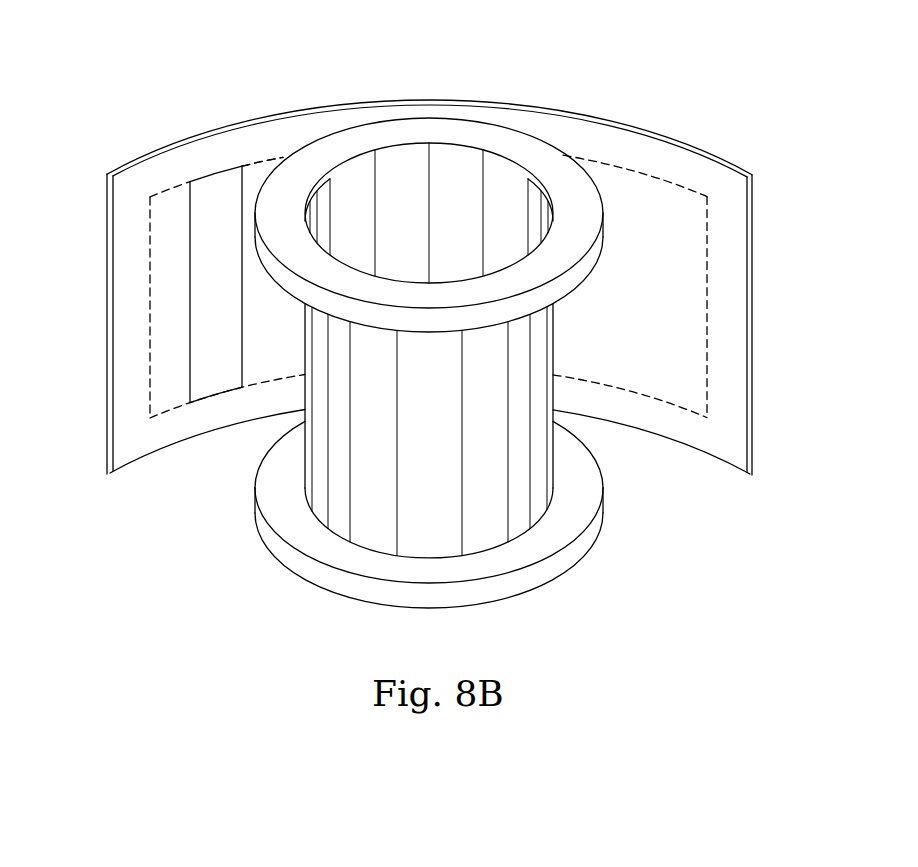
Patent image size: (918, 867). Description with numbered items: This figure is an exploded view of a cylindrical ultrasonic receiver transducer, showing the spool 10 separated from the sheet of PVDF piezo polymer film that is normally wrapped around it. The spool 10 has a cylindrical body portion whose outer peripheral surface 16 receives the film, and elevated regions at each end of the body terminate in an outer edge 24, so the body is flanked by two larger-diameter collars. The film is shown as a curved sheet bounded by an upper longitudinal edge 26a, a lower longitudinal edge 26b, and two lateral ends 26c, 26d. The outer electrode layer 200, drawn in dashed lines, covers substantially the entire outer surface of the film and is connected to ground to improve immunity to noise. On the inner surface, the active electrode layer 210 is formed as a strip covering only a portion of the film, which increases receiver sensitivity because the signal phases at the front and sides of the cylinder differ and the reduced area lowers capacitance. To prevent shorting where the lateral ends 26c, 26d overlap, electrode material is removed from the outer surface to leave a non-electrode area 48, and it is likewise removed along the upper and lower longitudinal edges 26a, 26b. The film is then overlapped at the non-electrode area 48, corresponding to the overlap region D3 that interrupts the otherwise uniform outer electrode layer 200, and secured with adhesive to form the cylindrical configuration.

The spool 10 is at (452, 183).
The outer peripheral surface 16 is at (446, 410).
The outer edge 24 is at (288, 560).
The upper longitudinal edge 26a is at (580, 114).
The lower longitudinal edge 26b is at (717, 460).
The lateral end 26c is at (749, 221).
The lateral end 26d is at (105, 243).
The non-electrode area 48 is at (188, 163).
The outer electrode layer 200 is at (427, 297).
The active electrode layer 210 is at (243, 173).
The overlap region D3 is at (130, 411).